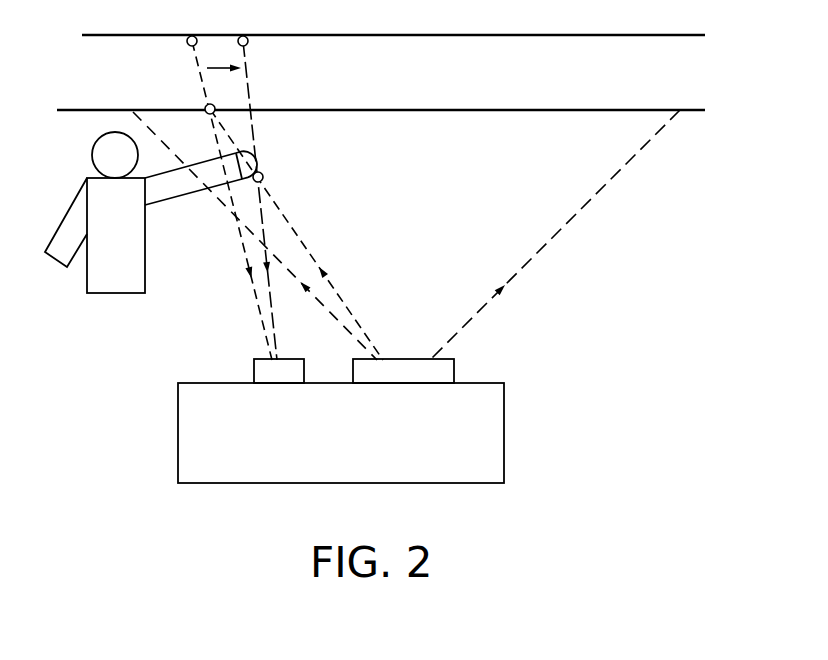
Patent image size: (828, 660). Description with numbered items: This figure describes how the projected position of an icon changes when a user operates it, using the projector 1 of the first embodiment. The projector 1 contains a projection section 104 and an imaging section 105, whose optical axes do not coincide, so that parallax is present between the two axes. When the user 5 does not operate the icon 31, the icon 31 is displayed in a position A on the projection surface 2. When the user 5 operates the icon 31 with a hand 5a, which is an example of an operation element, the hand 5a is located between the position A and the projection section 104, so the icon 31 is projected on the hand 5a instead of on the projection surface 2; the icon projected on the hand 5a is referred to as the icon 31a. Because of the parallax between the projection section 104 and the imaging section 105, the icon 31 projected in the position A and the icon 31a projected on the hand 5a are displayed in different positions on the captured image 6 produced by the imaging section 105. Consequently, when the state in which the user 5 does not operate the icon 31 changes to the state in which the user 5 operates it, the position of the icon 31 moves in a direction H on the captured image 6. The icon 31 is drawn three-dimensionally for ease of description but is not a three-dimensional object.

The projector 1 is at (387, 410).
The projection surface 2 is at (693, 111).
The captured image 6 is at (692, 36).
The user 5 is at (92, 162).
The hand 5a is at (260, 167).
The icon 31 is at (187, 41).
The icon projected on the hand 31a is at (248, 42).
The projection section 104 is at (442, 373).
The imaging section 105 is at (260, 373).
The direction H is at (203, 87).
The position A is at (207, 115).